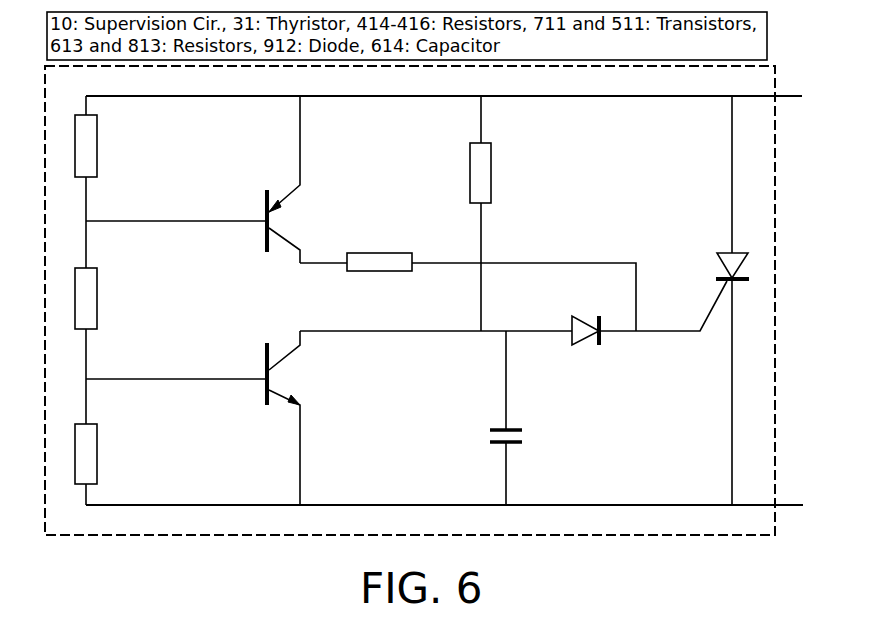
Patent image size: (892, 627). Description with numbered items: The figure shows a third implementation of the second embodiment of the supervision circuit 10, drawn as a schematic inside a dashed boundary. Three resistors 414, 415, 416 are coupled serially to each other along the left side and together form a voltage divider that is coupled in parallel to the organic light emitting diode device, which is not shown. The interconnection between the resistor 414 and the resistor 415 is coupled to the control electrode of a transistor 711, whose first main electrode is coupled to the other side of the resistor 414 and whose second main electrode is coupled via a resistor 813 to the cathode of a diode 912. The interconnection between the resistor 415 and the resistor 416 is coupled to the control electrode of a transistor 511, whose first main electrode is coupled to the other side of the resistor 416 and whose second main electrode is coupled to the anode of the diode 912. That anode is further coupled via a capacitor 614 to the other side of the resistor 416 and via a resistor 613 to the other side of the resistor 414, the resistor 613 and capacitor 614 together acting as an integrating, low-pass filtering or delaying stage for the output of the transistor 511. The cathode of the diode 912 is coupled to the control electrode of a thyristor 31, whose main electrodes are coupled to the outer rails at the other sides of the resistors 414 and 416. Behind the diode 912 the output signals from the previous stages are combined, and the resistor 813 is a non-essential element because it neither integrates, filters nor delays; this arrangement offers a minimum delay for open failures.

The supervision circuit 10 is at (700, 537).
The thyristor 31 is at (720, 266).
The resistor 414 is at (97, 147).
The resistor 415 is at (97, 293).
The resistor 416 is at (97, 449).
The transistor 711 is at (287, 218).
The transistor 511 is at (287, 375).
The resistor 613 is at (492, 175).
The resistor 813 is at (380, 273).
The diode 912 is at (586, 350).
The capacitor 614 is at (522, 437).